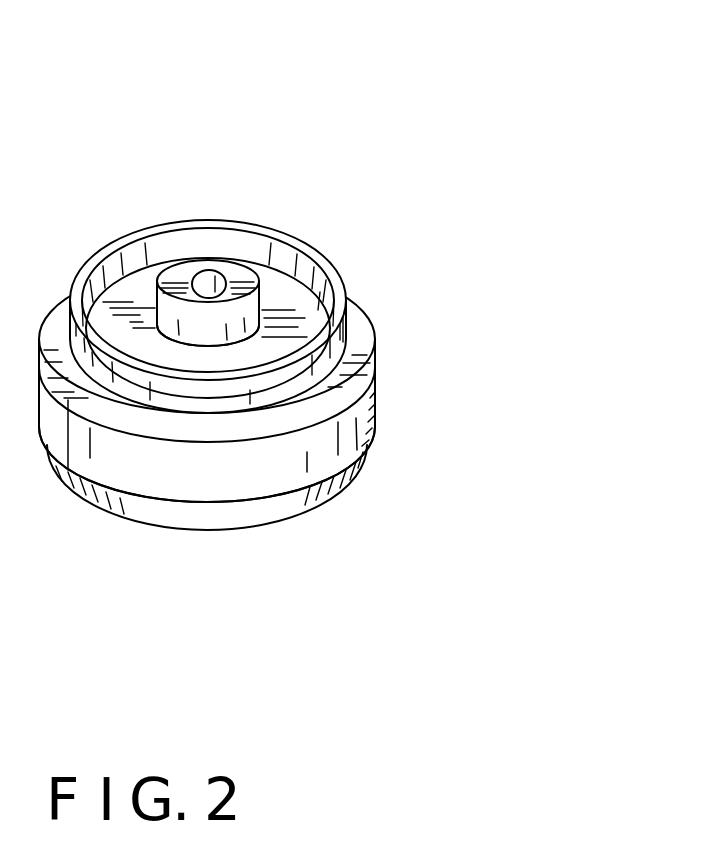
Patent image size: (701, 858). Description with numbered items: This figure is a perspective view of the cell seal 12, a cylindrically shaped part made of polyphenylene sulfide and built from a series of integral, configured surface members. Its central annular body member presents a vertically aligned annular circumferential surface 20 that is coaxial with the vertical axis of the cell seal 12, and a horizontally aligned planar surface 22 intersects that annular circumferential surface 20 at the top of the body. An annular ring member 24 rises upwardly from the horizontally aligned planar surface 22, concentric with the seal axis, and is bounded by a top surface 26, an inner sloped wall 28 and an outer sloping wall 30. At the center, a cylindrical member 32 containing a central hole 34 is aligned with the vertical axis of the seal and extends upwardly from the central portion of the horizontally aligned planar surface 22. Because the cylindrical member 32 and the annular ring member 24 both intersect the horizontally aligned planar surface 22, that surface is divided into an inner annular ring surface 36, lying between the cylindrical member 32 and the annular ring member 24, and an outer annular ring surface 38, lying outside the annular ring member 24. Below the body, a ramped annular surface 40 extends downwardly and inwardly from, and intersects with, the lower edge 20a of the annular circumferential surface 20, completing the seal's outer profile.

The cell seal 12 is at (389, 173).
The annular circumferential surface 20 is at (283, 470).
The lower edge 20a is at (257, 502).
The horizontally aligned planar surface 22 is at (308, 369).
The annular ring member 24 is at (288, 236).
The top surface 26 is at (337, 288).
The inner sloped wall 28 is at (303, 258).
The outer sloping wall 30 is at (352, 338).
The cylindrical member 32 is at (213, 268).
The central hole 34 is at (194, 291).
The inner annular ring surface 36 is at (265, 289).
The outer annular ring surface 38 is at (318, 397).
The ramped annular surface 40 is at (168, 512).